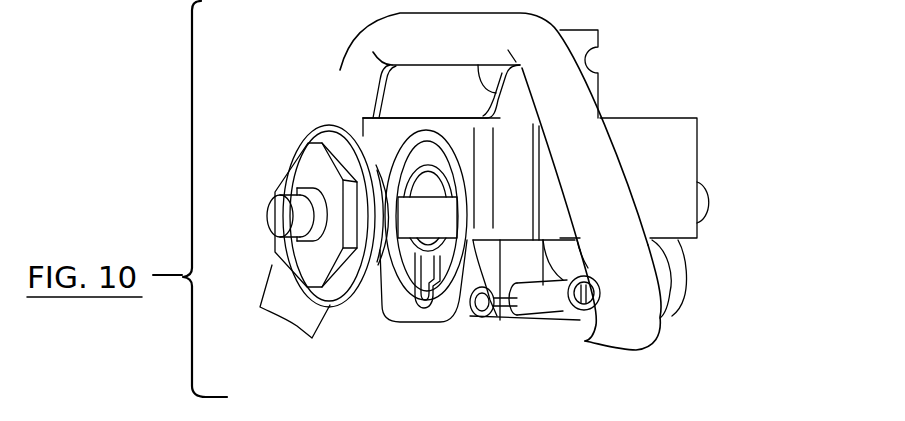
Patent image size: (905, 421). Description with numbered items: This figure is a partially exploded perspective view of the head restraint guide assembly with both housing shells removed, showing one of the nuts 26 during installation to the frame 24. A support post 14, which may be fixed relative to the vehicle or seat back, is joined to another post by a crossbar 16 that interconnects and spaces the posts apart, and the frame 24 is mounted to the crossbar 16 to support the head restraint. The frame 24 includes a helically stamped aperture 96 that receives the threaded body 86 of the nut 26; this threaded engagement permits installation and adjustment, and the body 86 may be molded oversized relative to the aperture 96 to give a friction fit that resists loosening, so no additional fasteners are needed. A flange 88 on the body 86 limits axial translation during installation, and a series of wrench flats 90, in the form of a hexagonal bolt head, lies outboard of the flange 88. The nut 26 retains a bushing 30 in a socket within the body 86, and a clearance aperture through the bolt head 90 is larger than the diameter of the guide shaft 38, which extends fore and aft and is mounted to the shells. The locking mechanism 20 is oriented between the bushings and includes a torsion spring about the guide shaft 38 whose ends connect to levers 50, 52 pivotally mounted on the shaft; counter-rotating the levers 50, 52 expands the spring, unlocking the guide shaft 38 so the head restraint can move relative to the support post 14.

The support post 14 is at (625, 313).
The crossbar 16 is at (518, 32).
The locking mechanism 20 is at (513, 334).
The frame 24 is at (660, 153).
The nut 26 is at (292, 285).
The bushing 30 is at (311, 190).
The guide shaft 38 is at (300, 205).
The lever 50 is at (583, 310).
The lever 52 is at (475, 316).
The threaded body 86 is at (383, 255).
The flange 88 is at (335, 128).
The wrench flats 90 is at (303, 257).
The helically stamped aperture 96 is at (425, 168).